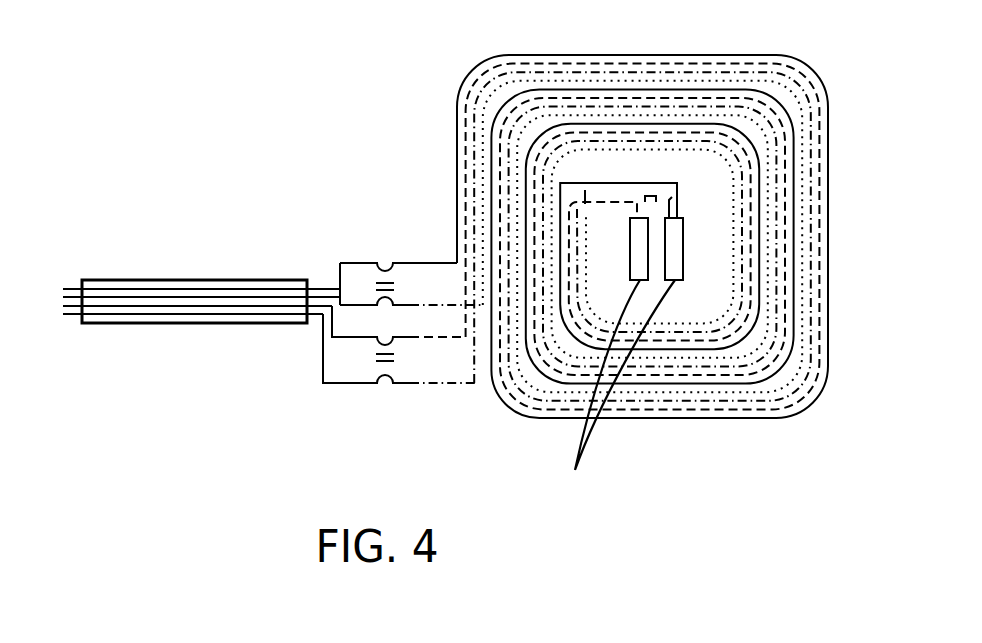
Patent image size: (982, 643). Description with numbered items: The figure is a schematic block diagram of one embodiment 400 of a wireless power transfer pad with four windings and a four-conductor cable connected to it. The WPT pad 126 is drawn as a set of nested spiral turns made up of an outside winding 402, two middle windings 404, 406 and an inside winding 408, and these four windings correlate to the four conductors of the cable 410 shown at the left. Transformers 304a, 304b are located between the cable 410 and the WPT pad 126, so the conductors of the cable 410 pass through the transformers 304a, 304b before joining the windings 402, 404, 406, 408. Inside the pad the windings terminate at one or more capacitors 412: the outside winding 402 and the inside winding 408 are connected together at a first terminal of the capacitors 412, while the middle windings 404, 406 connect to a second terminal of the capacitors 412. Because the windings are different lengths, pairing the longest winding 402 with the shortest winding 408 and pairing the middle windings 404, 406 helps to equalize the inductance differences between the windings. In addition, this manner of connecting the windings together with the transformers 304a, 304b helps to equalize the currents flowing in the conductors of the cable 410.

The embodiment of a WPT pad with four windings 400 is at (168, 60).
The WPT pad 126 is at (453, 68).
The outside winding 402 is at (456, 124).
The middle winding 404 is at (466, 158).
The middle winding 406 is at (474, 193).
The inside winding 408 is at (483, 223).
The transformer 304a is at (385, 260).
The transformer 304b is at (380, 393).
The four-conductor cable 410 is at (131, 325).
The capacitors 412 is at (618, 349).